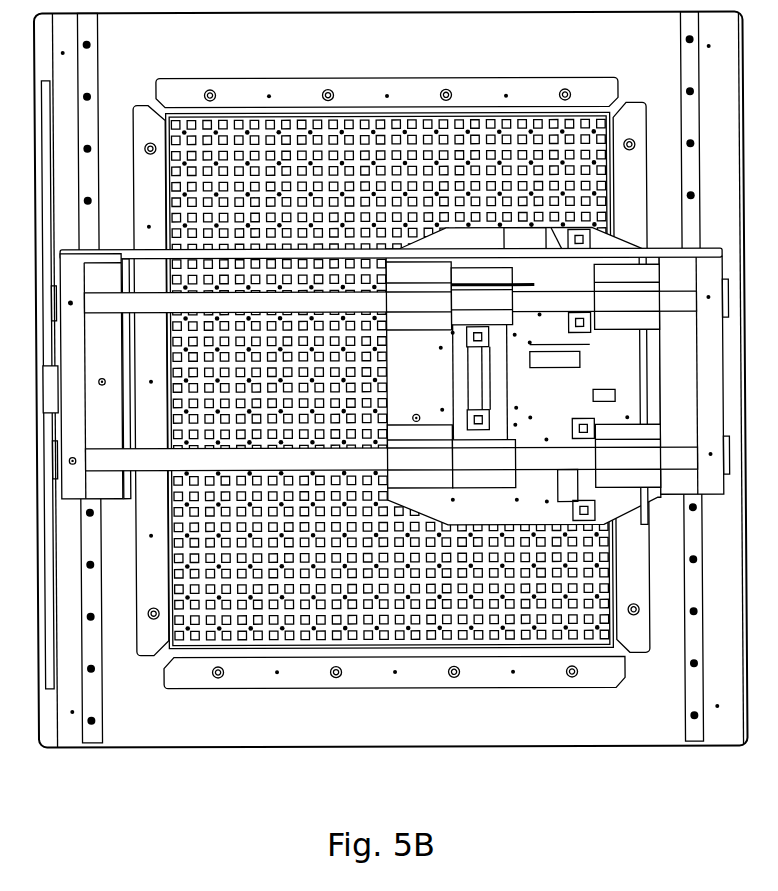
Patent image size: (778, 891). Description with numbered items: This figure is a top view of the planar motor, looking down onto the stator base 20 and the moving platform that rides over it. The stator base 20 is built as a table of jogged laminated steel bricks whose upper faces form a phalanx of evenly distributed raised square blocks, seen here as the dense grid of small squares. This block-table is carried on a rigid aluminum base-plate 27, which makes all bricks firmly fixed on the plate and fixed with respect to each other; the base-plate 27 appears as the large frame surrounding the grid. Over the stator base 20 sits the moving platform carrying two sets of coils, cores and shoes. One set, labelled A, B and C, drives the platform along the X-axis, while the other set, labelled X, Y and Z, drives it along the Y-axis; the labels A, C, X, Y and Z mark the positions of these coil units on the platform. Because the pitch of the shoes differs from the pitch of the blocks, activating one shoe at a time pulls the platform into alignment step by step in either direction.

The stator base 20 is at (622, 652).
The rigid aluminum base-plate 27 is at (65, 750).
The coil set A for X-axis A is at (495, 298).
The coil set C for X-axis C is at (469, 498).
The coil set X for Y-axis X is at (442, 387).
The coil set Y for Y-axis Y is at (545, 236).
The coil set Z for Y-axis Z is at (596, 422).